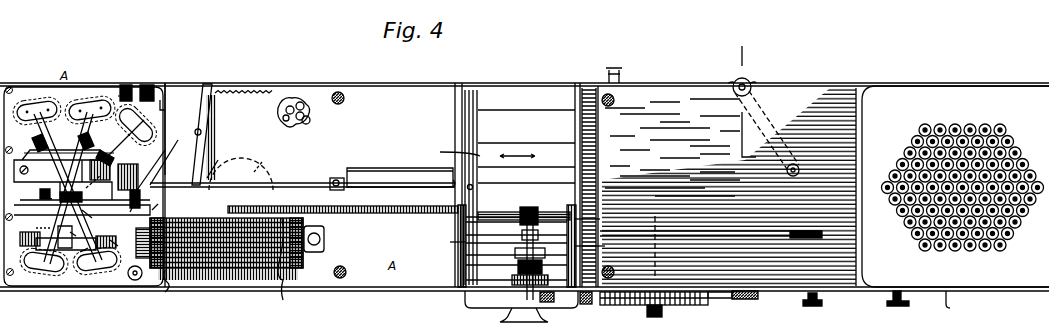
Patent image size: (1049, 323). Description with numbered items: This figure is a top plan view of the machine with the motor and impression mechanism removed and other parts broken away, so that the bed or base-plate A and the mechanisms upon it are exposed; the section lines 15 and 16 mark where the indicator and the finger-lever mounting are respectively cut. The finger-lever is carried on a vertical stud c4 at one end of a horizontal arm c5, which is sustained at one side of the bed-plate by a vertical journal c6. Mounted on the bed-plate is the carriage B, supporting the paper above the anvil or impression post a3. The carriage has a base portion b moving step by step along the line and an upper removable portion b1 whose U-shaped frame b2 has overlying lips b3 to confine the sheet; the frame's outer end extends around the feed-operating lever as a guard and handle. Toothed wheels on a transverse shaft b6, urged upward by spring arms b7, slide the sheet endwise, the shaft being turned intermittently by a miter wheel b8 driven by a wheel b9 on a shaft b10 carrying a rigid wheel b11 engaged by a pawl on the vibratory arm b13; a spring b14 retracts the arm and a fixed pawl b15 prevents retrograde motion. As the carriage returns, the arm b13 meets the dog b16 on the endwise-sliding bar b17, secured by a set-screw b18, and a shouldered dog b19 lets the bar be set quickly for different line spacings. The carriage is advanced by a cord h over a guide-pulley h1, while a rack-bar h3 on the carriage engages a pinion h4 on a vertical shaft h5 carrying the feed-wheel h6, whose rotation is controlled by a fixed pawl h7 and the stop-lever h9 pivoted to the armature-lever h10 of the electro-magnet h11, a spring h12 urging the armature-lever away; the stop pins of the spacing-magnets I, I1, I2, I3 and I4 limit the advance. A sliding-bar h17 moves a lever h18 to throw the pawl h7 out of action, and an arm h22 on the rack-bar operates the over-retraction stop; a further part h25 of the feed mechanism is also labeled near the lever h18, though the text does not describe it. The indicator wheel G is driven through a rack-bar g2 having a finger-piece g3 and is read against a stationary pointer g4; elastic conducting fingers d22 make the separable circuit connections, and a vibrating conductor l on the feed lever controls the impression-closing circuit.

The bed or base-plate A is at (729, 187).
The carriage B is at (520, 187).
The type-wheel casing D is at (962, 183).
The slide bar E is at (331, 186).
The indicator wheel G is at (654, 307).
The spacing-magnet I is at (132, 130).
The spacing-magnet I1 is at (93, 96).
The spacing-magnet I2 is at (37, 108).
The spacing-magnet I3 is at (41, 258).
The spacing-magnet I4 is at (97, 265).
The cord h is at (230, 259).
The guide-pulley h1 is at (82, 214).
The rack-bar h3 is at (302, 196).
The pinion h4 is at (168, 154).
The vertical shaft h5 is at (241, 174).
The ratchet-wheel (feed-wheel) h6 is at (150, 175).
The fixed pawl h7 is at (219, 162).
The stop-lever h9 is at (68, 229).
The armature-lever h10 is at (136, 203).
The electro-magnet (main feed magnet) h11 is at (78, 246).
The spring h12 is at (114, 242).
The sliding-bar h17 is at (279, 79).
The lever h18 is at (208, 116).
The arm h22 is at (41, 217).
The post h25 is at (162, 93).
The vibrating conductor l is at (165, 107).
The conducting fingers d22 is at (304, 114).
The anvil or impression post a3 is at (472, 186).
The base portion of carriage b is at (490, 128).
The upper removable portion (paper holder) b1 is at (535, 258).
The U-shaped frame b2 is at (453, 150).
The overlying lips b3 is at (451, 240).
The transverse shaft b6 is at (553, 211).
The spring arms b7 is at (594, 252).
The miter wheel b8 is at (524, 207).
The wheel b9 is at (535, 260).
The shaft b10 is at (520, 249).
The rigid wheel b11 is at (523, 273).
The vibratory arm b13 is at (535, 298).
The spring b14 is at (556, 260).
The fixed pawl b15 is at (542, 304).
The dog b16 is at (586, 304).
The adjustable bar b17 is at (778, 292).
The set-screw b18 is at (895, 305).
The dog b19 is at (858, 292).
The vertical stud c4 is at (799, 170).
The horizontal arm c5 is at (778, 125).
The vertical journal c6 is at (754, 84).
The rack-bar g2 is at (684, 238).
The finger-piece (handle) g3 is at (802, 231).
The stationary pointer g4 is at (717, 300).
The section line 15— 15 is at (661, 245).
The section line 16— 16 is at (744, 101).